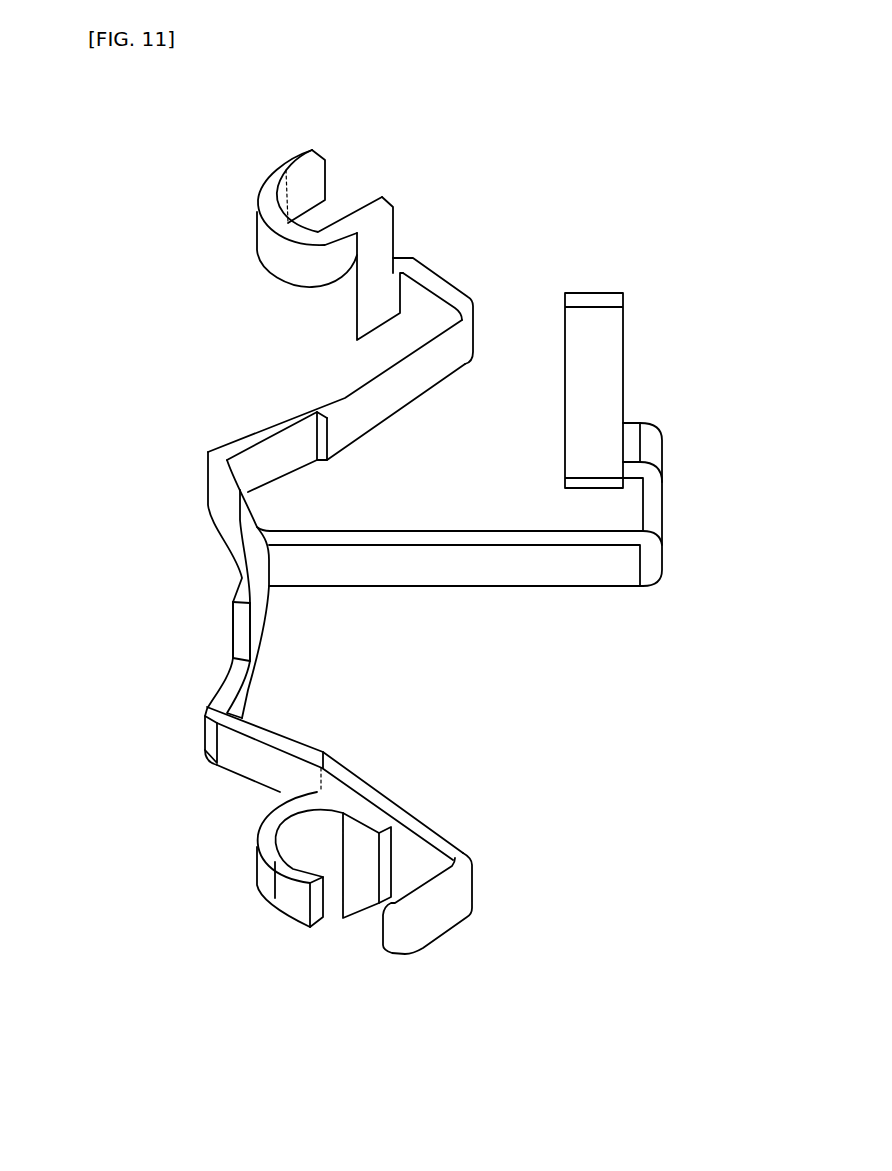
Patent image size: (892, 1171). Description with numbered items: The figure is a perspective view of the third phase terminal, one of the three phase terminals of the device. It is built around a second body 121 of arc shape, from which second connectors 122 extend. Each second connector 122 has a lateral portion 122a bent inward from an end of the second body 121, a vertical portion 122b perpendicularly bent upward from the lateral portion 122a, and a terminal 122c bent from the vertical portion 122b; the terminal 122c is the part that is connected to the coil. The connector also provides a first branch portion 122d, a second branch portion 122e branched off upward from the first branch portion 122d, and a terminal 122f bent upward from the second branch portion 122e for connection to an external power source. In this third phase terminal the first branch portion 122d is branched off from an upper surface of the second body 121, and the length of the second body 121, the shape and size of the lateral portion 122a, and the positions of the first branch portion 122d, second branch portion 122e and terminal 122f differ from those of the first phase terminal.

The second body 121 is at (207, 538).
The second connector 122 is at (410, 165).
The lateral portion 122a is at (345, 397).
The vertical portion 122b is at (377, 243).
The terminal 122c is at (291, 172).
The first branch portion 122d is at (250, 638).
The second branch portion 122e is at (647, 475).
The terminal 122f is at (598, 377).